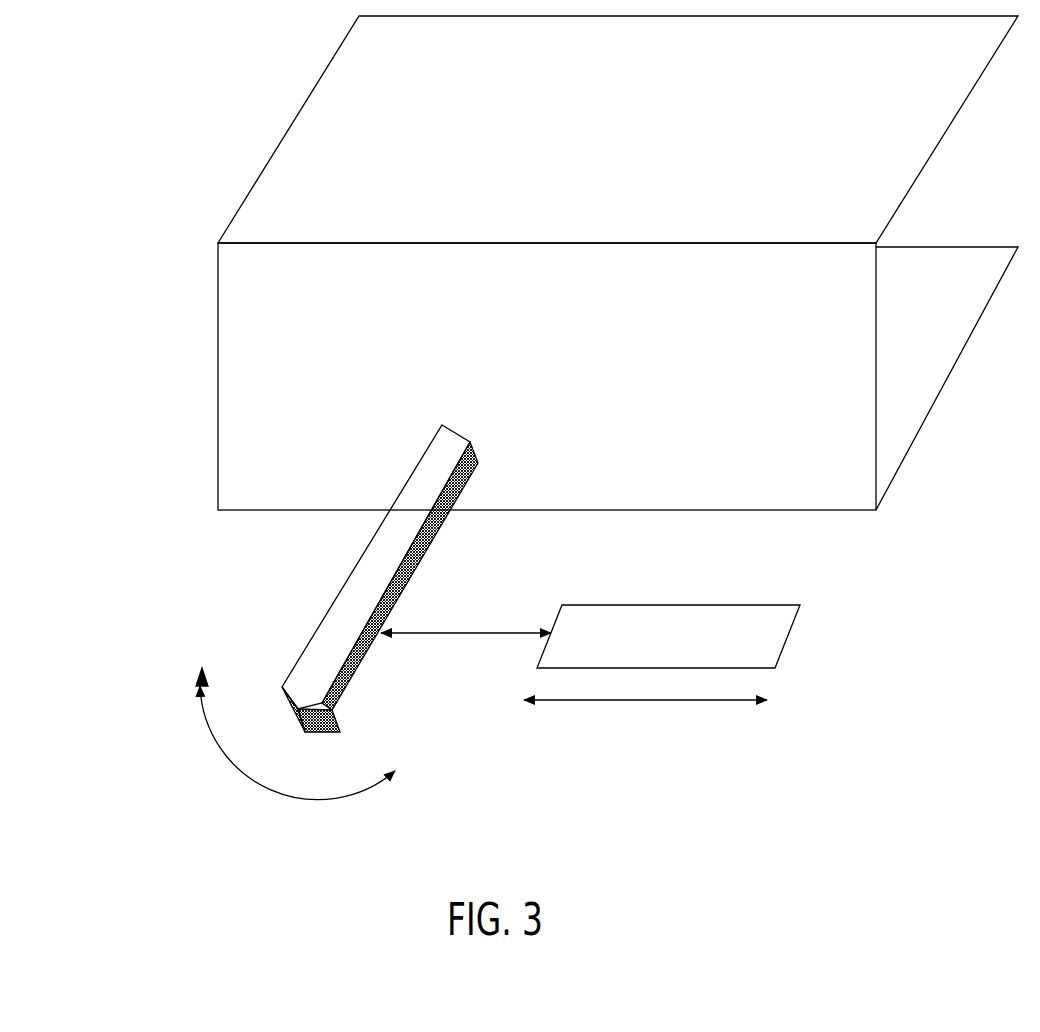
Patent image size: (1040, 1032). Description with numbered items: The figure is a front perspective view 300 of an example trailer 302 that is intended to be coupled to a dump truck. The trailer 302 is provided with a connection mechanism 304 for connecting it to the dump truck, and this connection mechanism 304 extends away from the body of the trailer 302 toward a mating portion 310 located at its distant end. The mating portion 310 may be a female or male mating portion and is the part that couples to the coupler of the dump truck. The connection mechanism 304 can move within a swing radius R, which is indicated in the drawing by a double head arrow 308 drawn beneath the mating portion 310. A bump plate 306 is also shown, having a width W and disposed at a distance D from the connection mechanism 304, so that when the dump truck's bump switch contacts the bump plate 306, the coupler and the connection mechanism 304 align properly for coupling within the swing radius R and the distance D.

The front perspective view 300 is at (207, 112).
The trailer 302 is at (535, 143).
The connection mechanism 304 is at (327, 617).
The bump plate 306 is at (658, 645).
The double head arrow 308 is at (308, 798).
The mating portion 310 is at (280, 684).